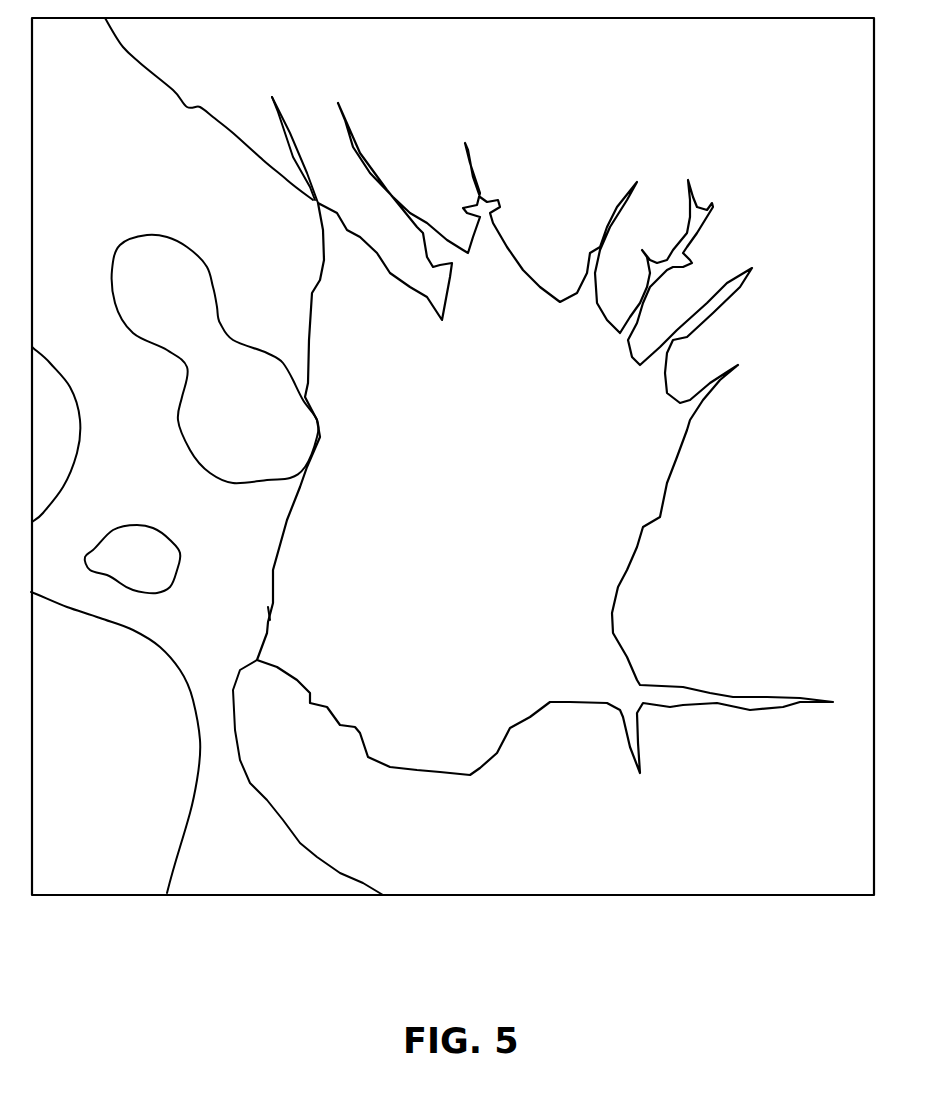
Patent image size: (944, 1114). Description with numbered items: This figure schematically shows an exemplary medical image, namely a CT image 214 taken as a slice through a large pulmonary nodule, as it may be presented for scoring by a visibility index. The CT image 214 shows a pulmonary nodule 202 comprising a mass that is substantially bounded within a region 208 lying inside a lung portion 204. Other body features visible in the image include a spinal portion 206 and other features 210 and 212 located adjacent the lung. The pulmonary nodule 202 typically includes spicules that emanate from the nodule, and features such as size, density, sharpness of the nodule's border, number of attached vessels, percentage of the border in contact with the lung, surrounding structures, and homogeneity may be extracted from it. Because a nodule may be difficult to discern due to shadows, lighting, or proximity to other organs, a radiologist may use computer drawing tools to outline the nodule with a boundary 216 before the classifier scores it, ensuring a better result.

The pulmonary nodule 202 is at (757, 130).
The lung portion 204 is at (776, 850).
The spinal portion 206 is at (131, 771).
The region 208 is at (502, 525).
The other feature 210 is at (137, 523).
The other feature 212 is at (267, 406).
The CT image 214 is at (150, 194).
The boundary 216 is at (268, 607).